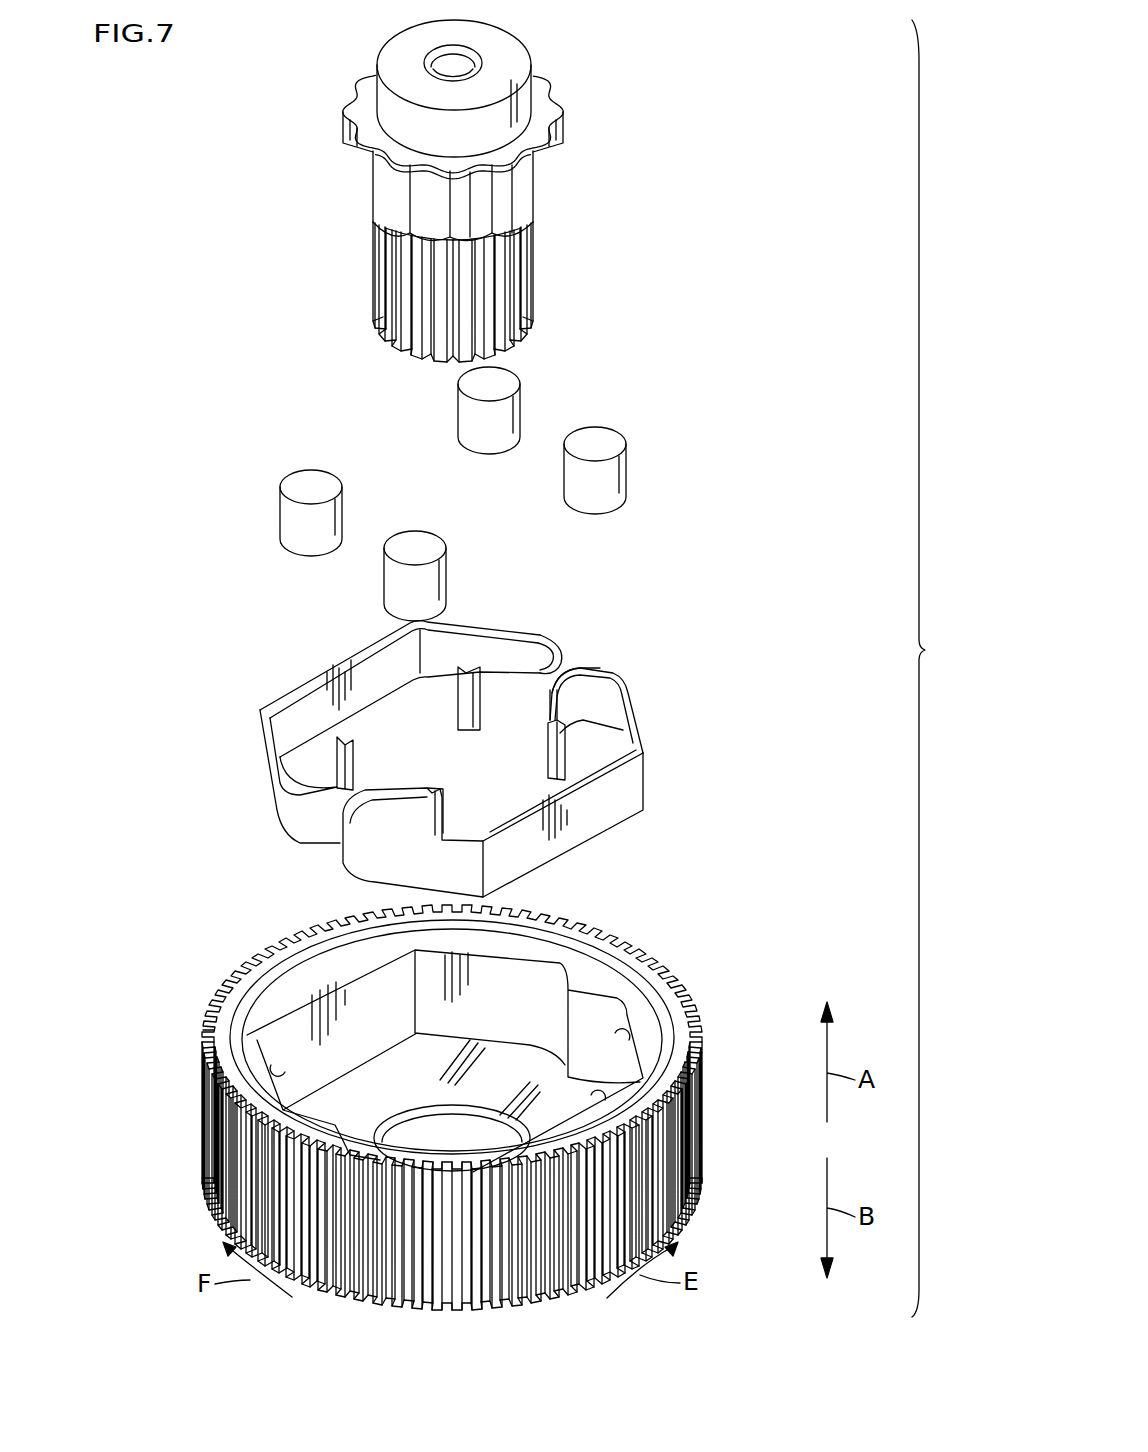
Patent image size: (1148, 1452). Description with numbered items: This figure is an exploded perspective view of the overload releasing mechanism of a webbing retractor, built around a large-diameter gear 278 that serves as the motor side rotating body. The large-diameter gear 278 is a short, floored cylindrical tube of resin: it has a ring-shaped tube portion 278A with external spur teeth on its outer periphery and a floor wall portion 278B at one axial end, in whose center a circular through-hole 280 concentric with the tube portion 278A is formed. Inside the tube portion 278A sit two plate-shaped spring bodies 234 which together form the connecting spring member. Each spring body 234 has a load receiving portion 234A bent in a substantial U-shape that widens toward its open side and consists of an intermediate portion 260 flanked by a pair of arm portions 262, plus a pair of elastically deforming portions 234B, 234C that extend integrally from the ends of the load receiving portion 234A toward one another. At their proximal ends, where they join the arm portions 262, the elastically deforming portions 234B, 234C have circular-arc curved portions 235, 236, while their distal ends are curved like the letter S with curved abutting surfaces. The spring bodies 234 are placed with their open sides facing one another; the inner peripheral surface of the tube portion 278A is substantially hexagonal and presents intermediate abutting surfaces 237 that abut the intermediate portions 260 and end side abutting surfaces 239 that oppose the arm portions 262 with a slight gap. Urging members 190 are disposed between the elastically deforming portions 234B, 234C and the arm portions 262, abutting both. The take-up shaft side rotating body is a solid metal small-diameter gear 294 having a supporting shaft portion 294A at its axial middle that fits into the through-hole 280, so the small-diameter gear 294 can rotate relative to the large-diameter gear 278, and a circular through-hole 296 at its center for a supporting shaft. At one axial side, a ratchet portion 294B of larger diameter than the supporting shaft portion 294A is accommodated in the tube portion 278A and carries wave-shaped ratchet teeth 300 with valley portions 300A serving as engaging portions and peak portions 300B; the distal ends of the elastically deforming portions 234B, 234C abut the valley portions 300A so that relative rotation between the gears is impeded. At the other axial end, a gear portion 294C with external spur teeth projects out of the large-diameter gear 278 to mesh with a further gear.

The urging member 190 is at (520, 402).
The spring body 234 is at (454, 734).
The load receiving portion 234A is at (358, 656).
The elastically deforming portion 234B is at (510, 665).
The elastically deforming portion 234C is at (333, 762).
The curved portion 235 is at (562, 650).
The curved portion 236 is at (613, 667).
The intermediate abutting surface 237 is at (345, 1090).
The end side abutting surface 239 is at (540, 978).
The intermediate portion 260 is at (290, 695).
The arm portion 262 is at (490, 623).
The large-diameter gear 278 is at (462, 1107).
The tube portion 278A is at (698, 1060).
The floor wall portion 278B is at (268, 1037).
The through-hole 280 is at (433, 1112).
The small-diameter gear 294 is at (462, 191).
The supporting shaft portion 294A is at (403, 247).
The ratchet portion 294B is at (562, 132).
The gear portion 294C is at (535, 298).
The through-hole 296 is at (475, 53).
The ratchet teeth 300 is at (393, 202).
The valley portion 300A is at (533, 207).
The peak portion 300B is at (510, 202).